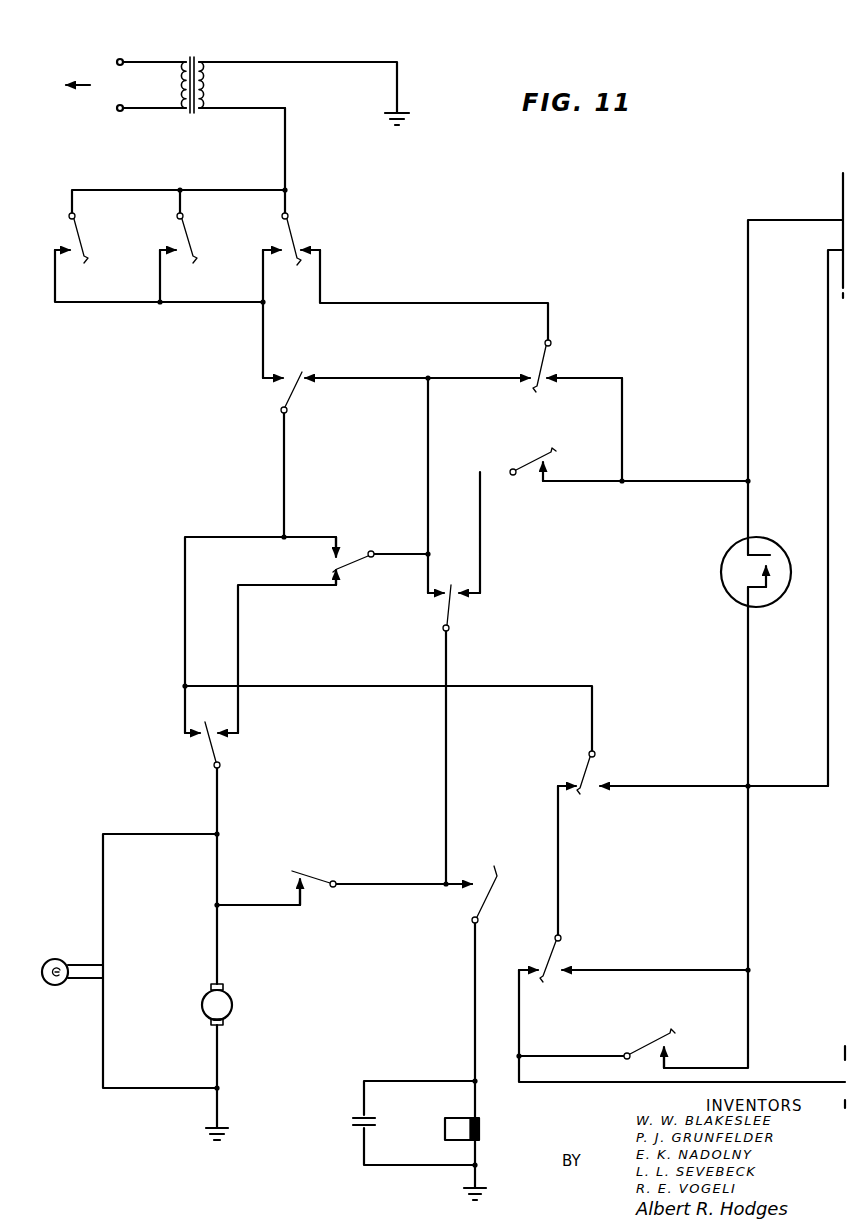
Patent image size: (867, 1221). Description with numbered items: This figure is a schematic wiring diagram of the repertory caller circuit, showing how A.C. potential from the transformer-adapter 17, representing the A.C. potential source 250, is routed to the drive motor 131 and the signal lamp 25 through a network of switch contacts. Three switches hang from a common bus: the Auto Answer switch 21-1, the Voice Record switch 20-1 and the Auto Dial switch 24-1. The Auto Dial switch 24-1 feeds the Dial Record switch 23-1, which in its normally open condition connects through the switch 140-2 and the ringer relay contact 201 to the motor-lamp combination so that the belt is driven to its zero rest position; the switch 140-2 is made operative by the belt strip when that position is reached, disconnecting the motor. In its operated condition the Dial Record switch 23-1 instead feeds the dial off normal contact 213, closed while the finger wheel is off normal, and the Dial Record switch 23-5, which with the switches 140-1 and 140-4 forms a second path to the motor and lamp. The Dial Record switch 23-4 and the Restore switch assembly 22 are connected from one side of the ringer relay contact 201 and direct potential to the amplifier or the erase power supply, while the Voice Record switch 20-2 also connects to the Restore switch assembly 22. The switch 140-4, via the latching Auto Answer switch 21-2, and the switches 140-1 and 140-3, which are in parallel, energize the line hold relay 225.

The transformer-adapter 17 is at (205, 56).
The A.C. potential source 250 is at (75, 75).
The Auto Answer switch 21-1 is at (72, 243).
The Voice Record switch 20-1 is at (190, 242).
The Auto Dial switch 24-1 is at (294, 236).
The Dial Record switch 23-1 is at (542, 363).
The switch 140-2 is at (288, 393).
The Dial Record switch 23-5 is at (530, 460).
The dial off normal contact 213 is at (722, 564).
The switch 140-3 is at (335, 568).
The switch 140-1 is at (452, 610).
The ringer relay contact 201 is at (207, 746).
The Dial Record switch 23-4 is at (588, 776).
The switch 140-4 is at (314, 884).
The Auto Answer switch 21-2 is at (482, 901).
The Restore switch assembly 22 is at (552, 963).
The signal lamp 25 is at (61, 986).
The drive motor 131 is at (234, 1006).
The Voice Record switch 20-2 is at (644, 1048).
The line hold relay 225 is at (482, 1133).